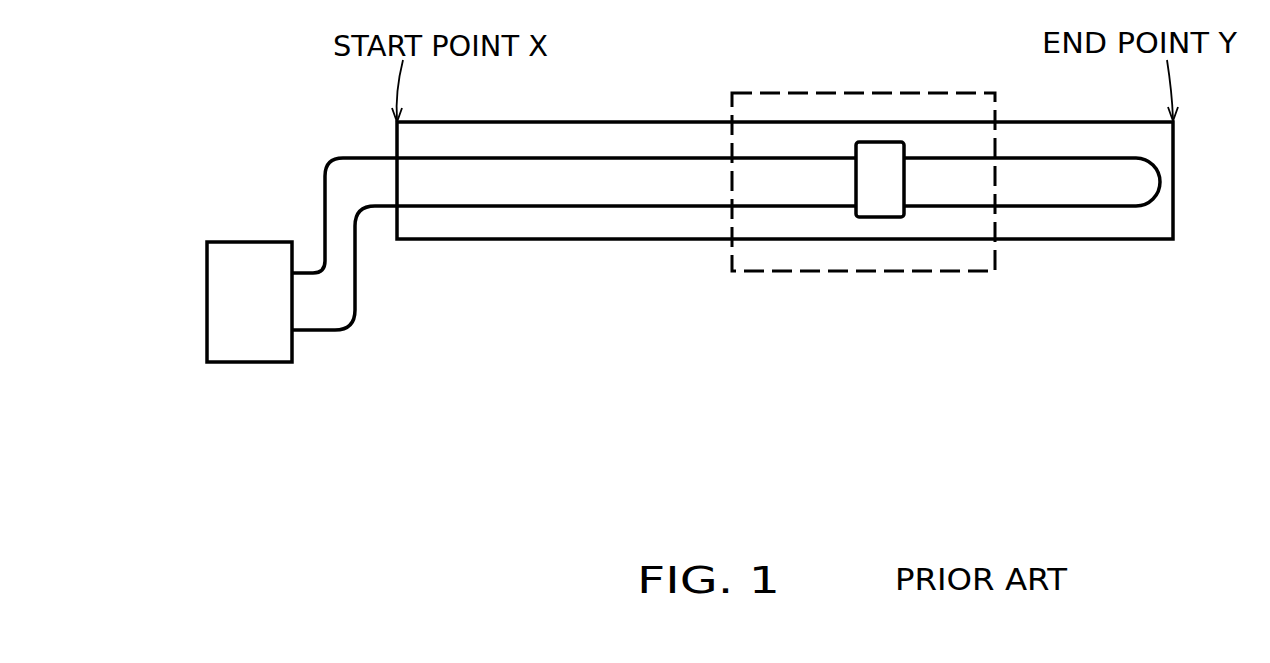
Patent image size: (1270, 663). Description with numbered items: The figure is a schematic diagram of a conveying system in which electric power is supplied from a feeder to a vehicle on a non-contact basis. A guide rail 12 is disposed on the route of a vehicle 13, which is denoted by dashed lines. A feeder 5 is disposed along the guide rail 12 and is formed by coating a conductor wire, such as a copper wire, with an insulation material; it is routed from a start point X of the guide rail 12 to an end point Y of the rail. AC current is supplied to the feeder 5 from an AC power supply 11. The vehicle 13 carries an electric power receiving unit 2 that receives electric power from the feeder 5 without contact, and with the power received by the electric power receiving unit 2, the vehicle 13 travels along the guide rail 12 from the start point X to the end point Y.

The electric power receiving unit 2 is at (887, 208).
The feeder 5 is at (558, 158).
The AC power supply 11 is at (262, 362).
The guide rail 12 is at (525, 240).
The vehicle 13 is at (732, 271).